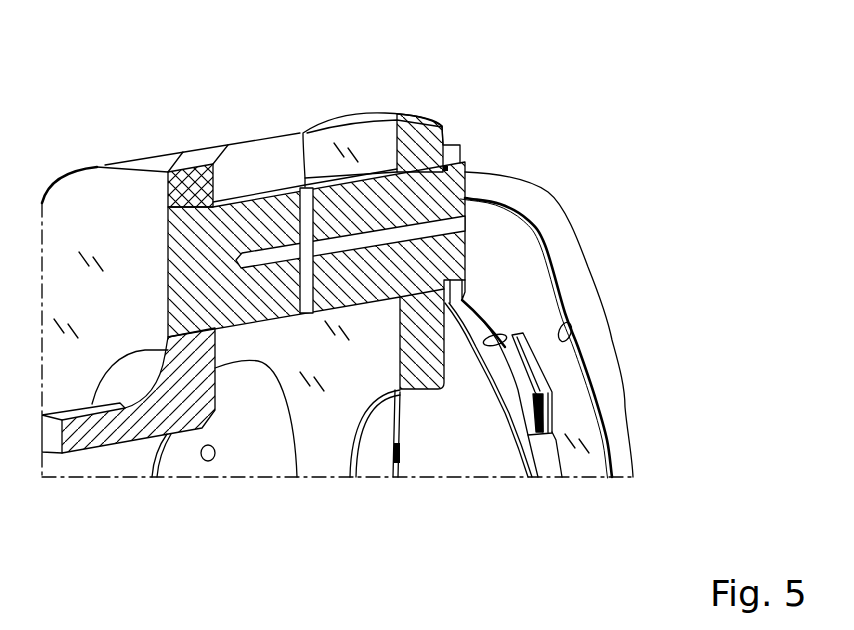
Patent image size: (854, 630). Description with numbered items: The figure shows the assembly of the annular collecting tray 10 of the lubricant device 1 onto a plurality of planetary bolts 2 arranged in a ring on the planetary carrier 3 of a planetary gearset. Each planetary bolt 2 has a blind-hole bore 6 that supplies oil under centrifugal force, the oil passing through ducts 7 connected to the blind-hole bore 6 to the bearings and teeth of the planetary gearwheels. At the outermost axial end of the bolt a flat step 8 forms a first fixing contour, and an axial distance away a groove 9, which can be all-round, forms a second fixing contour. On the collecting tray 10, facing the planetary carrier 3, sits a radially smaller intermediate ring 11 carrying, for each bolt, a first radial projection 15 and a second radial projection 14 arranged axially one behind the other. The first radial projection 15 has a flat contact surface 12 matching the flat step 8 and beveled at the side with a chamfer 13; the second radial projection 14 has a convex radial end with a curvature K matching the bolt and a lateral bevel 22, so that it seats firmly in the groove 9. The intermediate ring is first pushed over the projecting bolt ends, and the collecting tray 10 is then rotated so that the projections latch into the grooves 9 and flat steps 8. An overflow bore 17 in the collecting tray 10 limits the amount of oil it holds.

The lubricant device 1 is at (217, 106).
The planetary bolt 2 is at (195, 245).
The planetary carrier 3 is at (417, 128).
The blind-hole bore 6 is at (450, 227).
The ducts 7 is at (307, 199).
The flat step 8 is at (468, 289).
The groove 9 is at (455, 316).
The curvature K is at (506, 374).
The collecting tray 10 is at (625, 460).
The intermediate ring 11 is at (540, 457).
The flat contact surface 12 is at (549, 358).
The chamfer 13 is at (534, 321).
The second radial projection 14 is at (482, 357).
The first radial projection 15 is at (557, 416).
The overflow bore 17 is at (573, 317).
The lateral bevel 22 is at (516, 321).